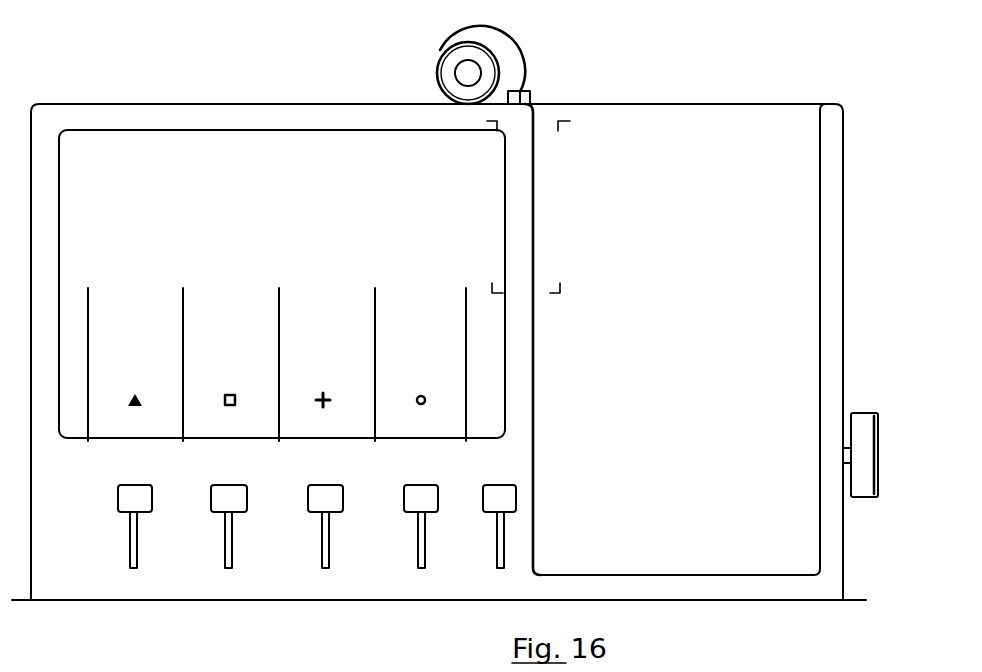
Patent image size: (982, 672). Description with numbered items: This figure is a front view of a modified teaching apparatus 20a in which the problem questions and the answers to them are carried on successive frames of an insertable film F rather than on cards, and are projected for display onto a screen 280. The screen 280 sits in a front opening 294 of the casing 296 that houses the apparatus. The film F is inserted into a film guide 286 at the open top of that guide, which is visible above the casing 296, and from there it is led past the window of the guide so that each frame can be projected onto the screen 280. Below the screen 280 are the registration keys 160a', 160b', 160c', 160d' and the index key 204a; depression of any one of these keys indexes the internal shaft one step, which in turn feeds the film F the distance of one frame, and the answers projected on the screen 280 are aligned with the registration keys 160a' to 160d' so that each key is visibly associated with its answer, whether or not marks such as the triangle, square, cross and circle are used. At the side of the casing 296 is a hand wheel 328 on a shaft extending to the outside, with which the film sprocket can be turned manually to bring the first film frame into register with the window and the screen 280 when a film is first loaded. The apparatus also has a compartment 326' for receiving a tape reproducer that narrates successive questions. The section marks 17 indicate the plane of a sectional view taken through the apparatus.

The section line indicator 17 is at (24, 115).
The modified teaching apparatus 20a is at (298, 80).
The front opening 294 is at (98, 124).
The casing 296 is at (363, 116).
The film F is at (516, 45).
The film guide 286 is at (531, 98).
The screen 280 is at (494, 184).
The compartment 326' is at (683, 372).
The hand wheel 328 is at (861, 418).
The registration key 160d' is at (153, 512).
The registration key 160c' is at (245, 512).
The registration key 160b' is at (339, 512).
The registration key 160a' is at (441, 512).
The index key 204a is at (497, 492).